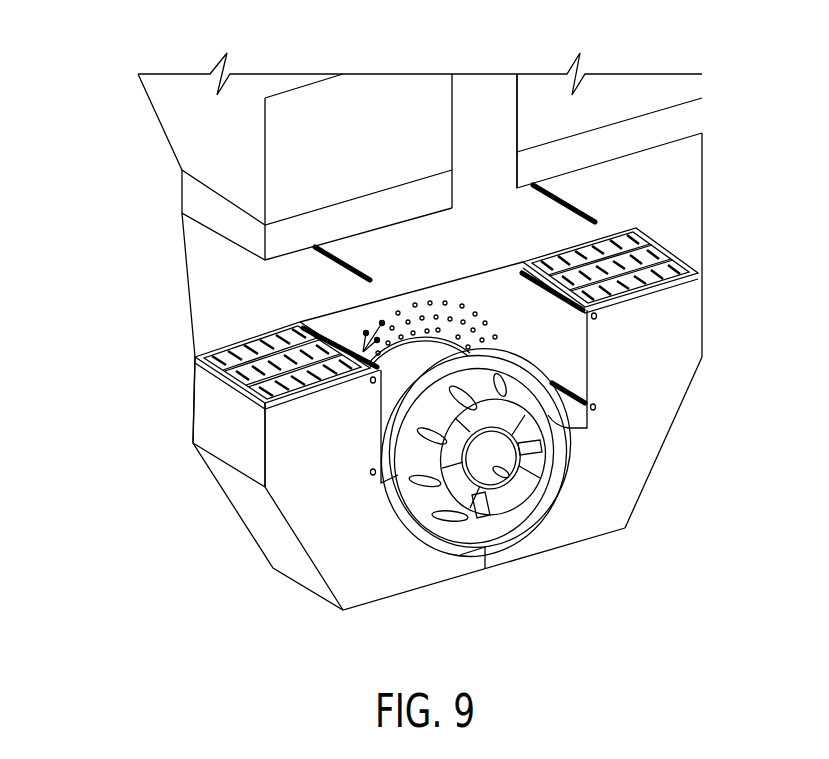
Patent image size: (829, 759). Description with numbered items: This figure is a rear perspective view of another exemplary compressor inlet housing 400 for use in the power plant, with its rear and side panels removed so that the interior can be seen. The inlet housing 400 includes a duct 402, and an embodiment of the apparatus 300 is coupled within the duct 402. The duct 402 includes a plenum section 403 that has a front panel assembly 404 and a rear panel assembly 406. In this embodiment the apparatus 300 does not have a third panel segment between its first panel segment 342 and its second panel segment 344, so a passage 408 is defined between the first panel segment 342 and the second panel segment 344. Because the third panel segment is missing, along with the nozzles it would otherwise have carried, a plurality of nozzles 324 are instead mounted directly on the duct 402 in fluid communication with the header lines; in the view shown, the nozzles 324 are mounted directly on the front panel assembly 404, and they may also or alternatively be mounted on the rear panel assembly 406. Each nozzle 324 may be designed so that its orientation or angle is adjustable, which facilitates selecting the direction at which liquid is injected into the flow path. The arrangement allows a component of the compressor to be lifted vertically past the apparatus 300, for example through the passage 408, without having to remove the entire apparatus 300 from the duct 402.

The compressor inlet housing 400 is at (125, 118).
The passage 408 is at (504, 291).
The second panel segment 344 is at (615, 233).
The first panel segment 342 is at (270, 325).
The apparatus 300 is at (230, 335).
The duct 402 is at (193, 425).
The front panel assembly 404 is at (517, 306).
The rear panel assembly 406 is at (675, 363).
The plenum section 403 is at (657, 415).
The nozzles 324 is at (363, 352).